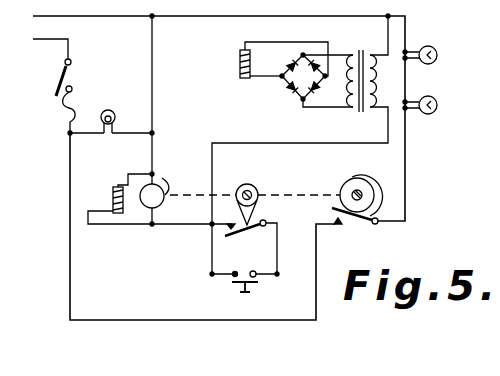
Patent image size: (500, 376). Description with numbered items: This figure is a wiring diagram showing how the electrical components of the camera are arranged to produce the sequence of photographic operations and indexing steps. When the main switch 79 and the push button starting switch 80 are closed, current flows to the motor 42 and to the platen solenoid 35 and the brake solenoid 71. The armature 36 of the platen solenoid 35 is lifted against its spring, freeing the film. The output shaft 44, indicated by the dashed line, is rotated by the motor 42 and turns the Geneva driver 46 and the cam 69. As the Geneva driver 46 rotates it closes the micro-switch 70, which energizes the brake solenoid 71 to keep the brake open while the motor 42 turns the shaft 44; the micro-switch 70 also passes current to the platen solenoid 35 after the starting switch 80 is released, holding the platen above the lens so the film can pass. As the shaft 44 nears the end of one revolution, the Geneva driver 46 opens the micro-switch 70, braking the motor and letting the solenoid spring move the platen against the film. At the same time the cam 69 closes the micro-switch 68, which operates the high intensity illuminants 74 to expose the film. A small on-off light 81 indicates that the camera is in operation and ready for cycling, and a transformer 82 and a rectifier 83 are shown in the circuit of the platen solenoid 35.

The main switch 79 is at (57, 78).
The on-off light 81 is at (113, 110).
The brake solenoid 71 is at (116, 186).
The motor 42 is at (165, 195).
The output shaft 44 is at (282, 194).
The Geneva driver 46 is at (251, 184).
The micro-switch 70 is at (251, 231).
The push button starting switch 80 is at (236, 283).
The cam 69 is at (365, 180).
The micro-switch 68 is at (357, 225).
The platen solenoid 35 is at (238, 57).
The armature 36 is at (238, 78).
The rectifier 83 is at (292, 92).
The transformer 82 is at (358, 55).
The high intensity illuminants 74 is at (438, 52).